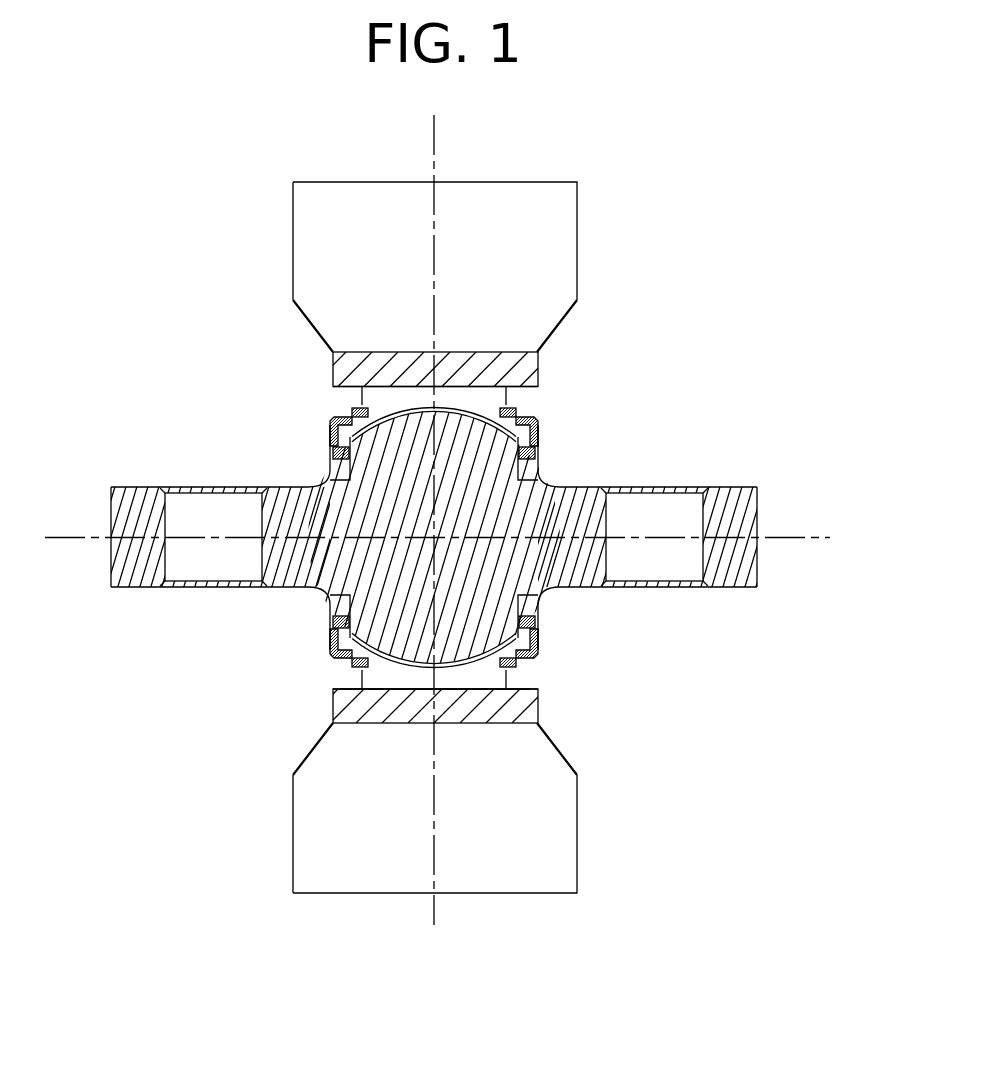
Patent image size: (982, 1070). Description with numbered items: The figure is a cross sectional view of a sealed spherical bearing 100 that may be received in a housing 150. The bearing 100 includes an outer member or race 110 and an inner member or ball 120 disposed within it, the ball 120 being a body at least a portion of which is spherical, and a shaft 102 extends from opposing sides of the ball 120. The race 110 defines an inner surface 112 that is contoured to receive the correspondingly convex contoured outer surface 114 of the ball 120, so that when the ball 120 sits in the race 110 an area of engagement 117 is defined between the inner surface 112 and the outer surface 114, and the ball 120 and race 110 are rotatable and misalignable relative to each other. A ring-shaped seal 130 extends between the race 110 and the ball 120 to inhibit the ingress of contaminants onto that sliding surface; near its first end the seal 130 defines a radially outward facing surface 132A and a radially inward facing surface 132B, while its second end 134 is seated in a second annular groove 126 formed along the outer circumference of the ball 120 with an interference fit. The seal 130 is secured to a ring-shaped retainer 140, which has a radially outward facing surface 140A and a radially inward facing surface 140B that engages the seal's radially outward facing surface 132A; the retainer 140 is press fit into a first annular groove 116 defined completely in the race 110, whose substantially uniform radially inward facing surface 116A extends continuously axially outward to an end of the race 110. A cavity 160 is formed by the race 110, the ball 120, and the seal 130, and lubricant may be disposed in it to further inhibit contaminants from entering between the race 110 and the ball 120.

The bearing 100 is at (718, 374).
The shaft 102 is at (124, 487).
The race 110 is at (362, 396).
The inner surface 112 is at (538, 387).
The outer surface 114 is at (555, 487).
The first annular groove 116 is at (377, 404).
The radially inward facing surface 116A is at (513, 667).
The area of engagement 117 is at (362, 690).
The ball 120 is at (350, 522).
The second annular groove 126 is at (330, 480).
The seal 130 is at (345, 420).
The radially outward facing surface 132A is at (346, 661).
The radially inward facing surface 132B is at (540, 613).
The second end 134 is at (336, 452).
The retainer 140 is at (540, 408).
The radially outward facing surface 140A is at (352, 410).
The radially inward facing surface 140B is at (392, 684).
The housing 150 is at (538, 353).
The cavity 160 is at (540, 440).